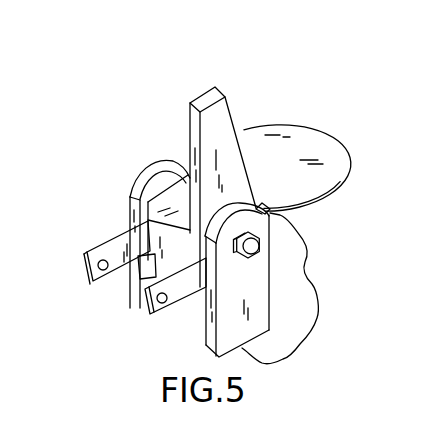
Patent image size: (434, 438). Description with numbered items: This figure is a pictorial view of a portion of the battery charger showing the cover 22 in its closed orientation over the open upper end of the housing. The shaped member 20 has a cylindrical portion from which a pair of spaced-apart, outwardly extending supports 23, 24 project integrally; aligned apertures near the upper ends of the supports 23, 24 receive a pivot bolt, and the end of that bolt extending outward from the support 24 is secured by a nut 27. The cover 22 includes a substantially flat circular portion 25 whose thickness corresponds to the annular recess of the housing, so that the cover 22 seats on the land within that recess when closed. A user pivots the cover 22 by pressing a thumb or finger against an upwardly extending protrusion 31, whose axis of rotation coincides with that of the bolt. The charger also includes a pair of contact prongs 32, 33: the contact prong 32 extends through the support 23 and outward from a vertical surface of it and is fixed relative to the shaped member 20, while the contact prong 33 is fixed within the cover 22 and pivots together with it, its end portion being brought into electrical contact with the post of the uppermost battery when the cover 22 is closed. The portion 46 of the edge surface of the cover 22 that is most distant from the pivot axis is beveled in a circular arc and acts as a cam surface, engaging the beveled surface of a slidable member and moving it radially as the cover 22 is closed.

The cover 22 is at (227, 194).
The portion of the edge surface of the cover 46 is at (337, 145).
The flat circular portion 25 is at (319, 199).
The upwardly extending protrusion 31 is at (223, 118).
The support 24 is at (133, 212).
The contact prong 33 is at (108, 278).
The contact prong 32 is at (152, 316).
The support 23 is at (223, 295).
The nut 27 is at (257, 248).
The shaped member 20 is at (311, 322).